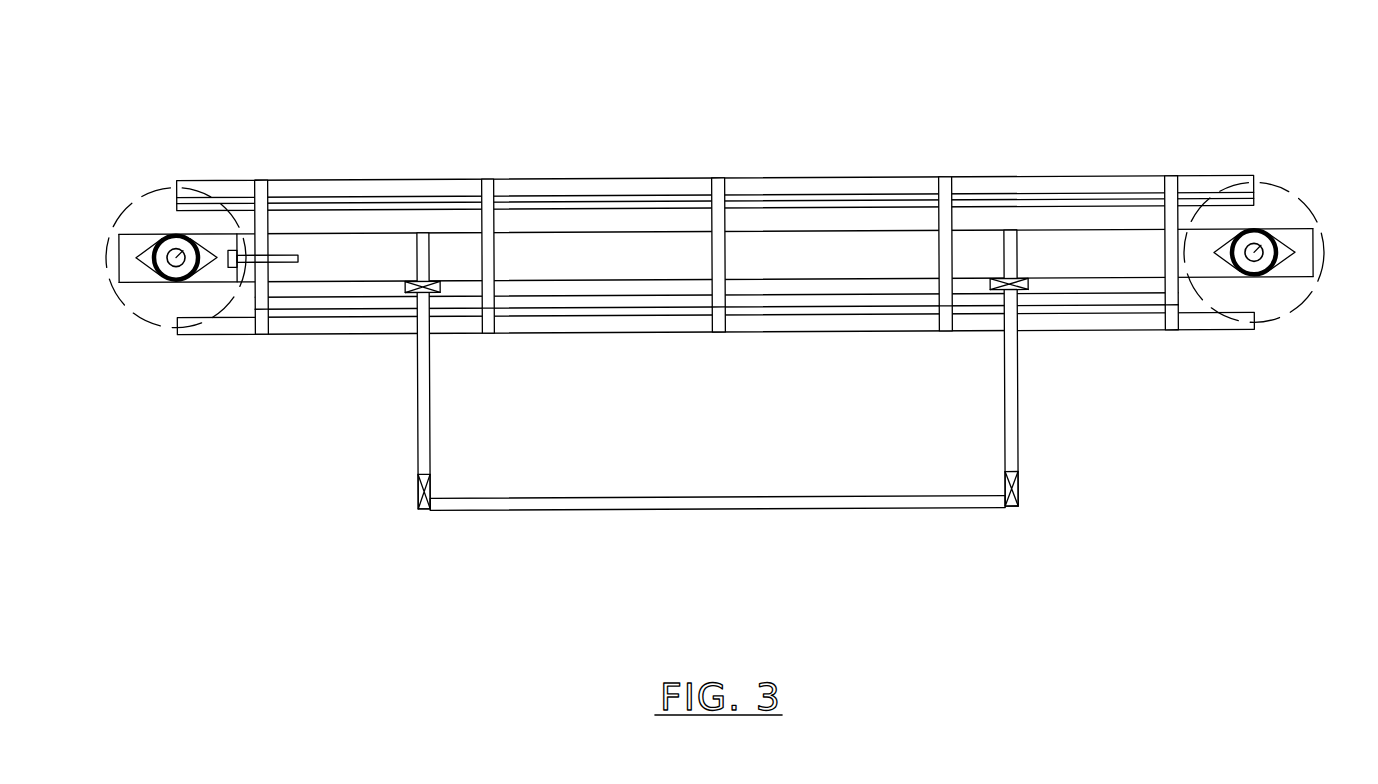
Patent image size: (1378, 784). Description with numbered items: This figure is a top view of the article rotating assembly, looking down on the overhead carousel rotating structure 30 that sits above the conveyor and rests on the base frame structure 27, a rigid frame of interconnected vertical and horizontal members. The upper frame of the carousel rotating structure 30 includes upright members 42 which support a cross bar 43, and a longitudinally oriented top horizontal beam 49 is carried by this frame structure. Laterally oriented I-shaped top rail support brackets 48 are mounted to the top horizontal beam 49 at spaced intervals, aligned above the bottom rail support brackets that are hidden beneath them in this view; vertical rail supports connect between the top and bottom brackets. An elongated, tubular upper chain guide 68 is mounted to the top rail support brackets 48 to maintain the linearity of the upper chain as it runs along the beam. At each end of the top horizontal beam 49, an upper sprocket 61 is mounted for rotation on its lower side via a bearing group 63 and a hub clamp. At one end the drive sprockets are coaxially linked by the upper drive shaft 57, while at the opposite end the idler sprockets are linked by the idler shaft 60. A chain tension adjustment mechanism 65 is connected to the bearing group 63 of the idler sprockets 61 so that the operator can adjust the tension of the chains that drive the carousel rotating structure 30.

The carousel rotating structure 30 is at (158, 103).
The base frame structure 27 is at (882, 306).
The upright members 42 is at (405, 286).
The cross bar 43 is at (712, 510).
The top rail support brackets 48 is at (266, 214).
The top horizontal beam 49 is at (622, 268).
The upper drive shaft 57 is at (1276, 245).
The idler shaft 60 is at (157, 243).
The upper sprockets 61 is at (129, 194).
The bearing group 63 is at (180, 280).
The chain tension adjustment mechanism 65 is at (292, 262).
The upper chain guide 68 is at (600, 180).